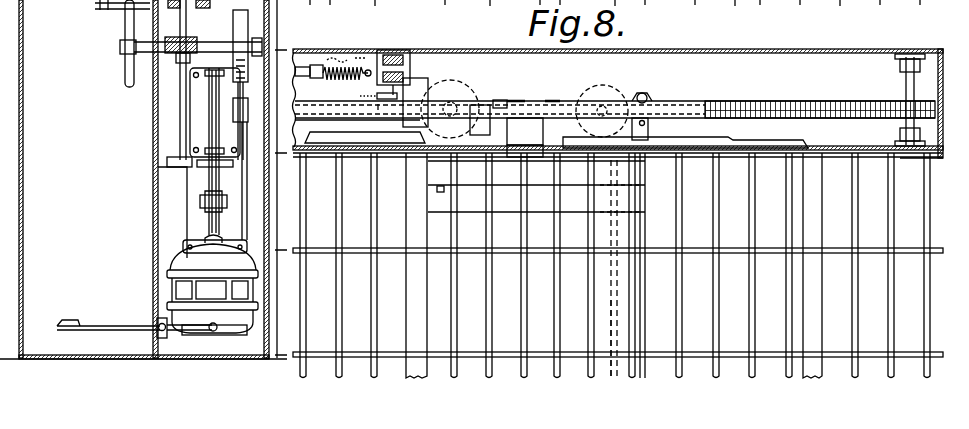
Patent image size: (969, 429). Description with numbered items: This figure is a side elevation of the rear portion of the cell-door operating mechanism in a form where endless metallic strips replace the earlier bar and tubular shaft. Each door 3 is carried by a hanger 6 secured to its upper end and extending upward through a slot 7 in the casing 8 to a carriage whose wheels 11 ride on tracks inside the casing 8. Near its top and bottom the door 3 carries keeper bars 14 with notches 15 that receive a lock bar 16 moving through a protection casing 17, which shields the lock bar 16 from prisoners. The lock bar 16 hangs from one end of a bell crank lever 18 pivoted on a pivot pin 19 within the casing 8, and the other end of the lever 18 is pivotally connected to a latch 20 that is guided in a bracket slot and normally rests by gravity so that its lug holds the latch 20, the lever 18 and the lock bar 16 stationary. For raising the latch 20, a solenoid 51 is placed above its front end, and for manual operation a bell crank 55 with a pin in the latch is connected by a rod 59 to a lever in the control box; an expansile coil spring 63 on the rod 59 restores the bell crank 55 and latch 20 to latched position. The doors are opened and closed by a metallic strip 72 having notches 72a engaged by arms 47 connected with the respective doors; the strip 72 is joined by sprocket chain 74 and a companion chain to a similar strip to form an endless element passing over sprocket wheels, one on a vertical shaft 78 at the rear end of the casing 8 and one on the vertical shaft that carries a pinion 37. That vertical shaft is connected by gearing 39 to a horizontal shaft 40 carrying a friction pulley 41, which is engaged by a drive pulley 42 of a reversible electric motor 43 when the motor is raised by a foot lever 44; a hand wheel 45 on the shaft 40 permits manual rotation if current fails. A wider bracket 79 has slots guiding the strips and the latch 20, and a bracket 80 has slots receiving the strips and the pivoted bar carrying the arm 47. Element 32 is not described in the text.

The door 3 is at (422, 295).
The hanger 6 is at (525, 137).
The slot 7 is at (713, 150).
The casing 8 is at (678, 52).
The wheel 11 is at (600, 90).
The bar 14 is at (515, 205).
The notch 15 is at (447, 188).
The lock bar 16 is at (610, 233).
The protection casing 17 is at (605, 318).
The bell crank lever 18 is at (646, 86).
The pivot pin 19 is at (650, 125).
The latch 20 is at (553, 100).
The shaft 32 is at (110, 3).
The pinion 37 is at (380, 105).
The gearing 39 is at (177, 52).
The horizontal shaft 40 is at (208, 43).
The friction pulley 41 is at (243, 22).
The drive pulley 42 is at (236, 110).
The electric motor 43 is at (182, 258).
The foot lever 44 is at (117, 312).
The hand wheel 45 is at (128, 72).
The arm 47 is at (498, 100).
The solenoid 51 is at (393, 56).
The bell crank 55 is at (368, 86).
The rod 59 is at (303, 66).
The expansile coil spring 63 is at (332, 68).
The metallic strip 72 is at (692, 90).
The notch 72a is at (515, 100).
The sprocket chain 74 is at (830, 75).
The vertical shaft 78 is at (906, 82).
The bracket 79 is at (415, 80).
The bracket 80 is at (465, 95).